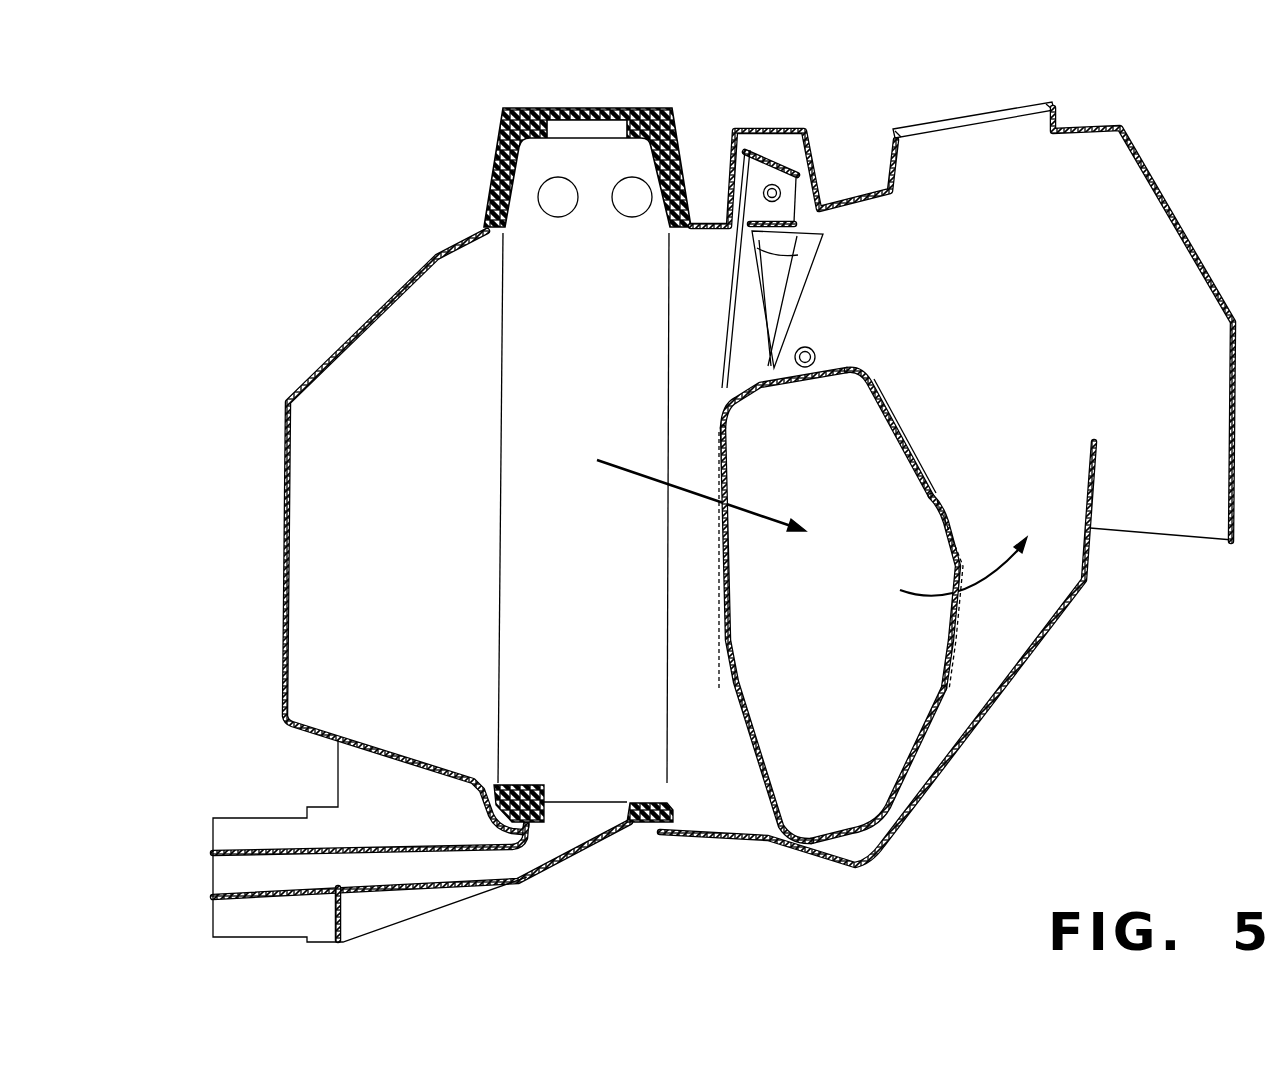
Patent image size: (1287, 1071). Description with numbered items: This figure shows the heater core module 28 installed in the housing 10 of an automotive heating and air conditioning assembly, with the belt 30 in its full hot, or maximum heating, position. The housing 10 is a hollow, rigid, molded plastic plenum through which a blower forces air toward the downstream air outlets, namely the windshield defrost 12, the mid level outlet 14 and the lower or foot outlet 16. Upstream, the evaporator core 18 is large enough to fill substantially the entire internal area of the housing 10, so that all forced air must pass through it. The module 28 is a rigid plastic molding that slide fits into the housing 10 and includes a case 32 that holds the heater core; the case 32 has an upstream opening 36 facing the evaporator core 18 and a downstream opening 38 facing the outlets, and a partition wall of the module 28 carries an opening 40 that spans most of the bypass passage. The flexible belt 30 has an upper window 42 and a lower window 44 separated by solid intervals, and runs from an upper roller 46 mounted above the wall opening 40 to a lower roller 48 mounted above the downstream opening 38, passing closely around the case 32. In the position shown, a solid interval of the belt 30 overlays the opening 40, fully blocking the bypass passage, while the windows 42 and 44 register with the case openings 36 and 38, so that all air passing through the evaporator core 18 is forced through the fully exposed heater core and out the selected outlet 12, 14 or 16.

The housing 10 is at (530, 95).
The windshield defrost 12 is at (999, 112).
The mid level outlet 14 is at (1173, 210).
The lower or foot outlet 16 is at (1178, 523).
The evaporator core 18 is at (517, 443).
The module 28 is at (776, 144).
The belt 30 is at (730, 265).
The case 32 is at (873, 433).
The upstream opening 36 is at (731, 622).
The downstream opening 38 is at (945, 520).
The opening 40 is at (757, 250).
The upper window 42 is at (719, 458).
The lower window 44 is at (950, 687).
The upper roller 46 is at (781, 190).
The lower roller 48 is at (815, 354).